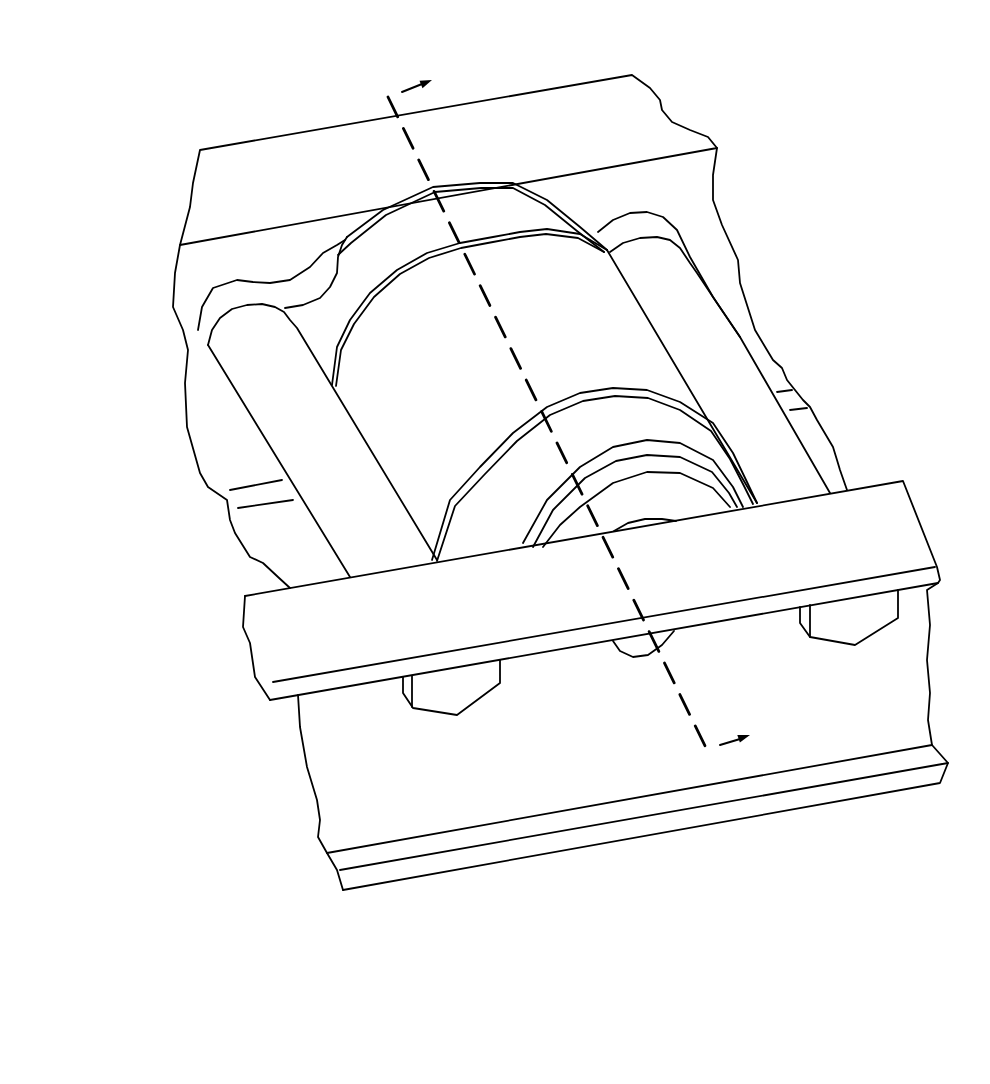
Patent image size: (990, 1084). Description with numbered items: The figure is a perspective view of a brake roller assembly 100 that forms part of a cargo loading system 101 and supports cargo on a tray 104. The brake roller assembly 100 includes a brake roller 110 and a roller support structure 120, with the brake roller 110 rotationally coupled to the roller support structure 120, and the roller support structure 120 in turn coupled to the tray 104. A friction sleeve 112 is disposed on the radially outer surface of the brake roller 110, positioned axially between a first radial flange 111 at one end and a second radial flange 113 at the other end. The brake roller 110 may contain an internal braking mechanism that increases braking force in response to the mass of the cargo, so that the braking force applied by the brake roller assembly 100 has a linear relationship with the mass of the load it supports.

The brake roller assembly 100 is at (533, 503).
The cargo loading system 101 is at (504, 331).
The tray 104 is at (575, 143).
The brake roller 110 is at (387, 283).
The first radial flange 111 is at (519, 381).
The friction sleeve 112 is at (452, 383).
The second radial flange 113 is at (594, 522).
The roller support structure 120 is at (429, 166).